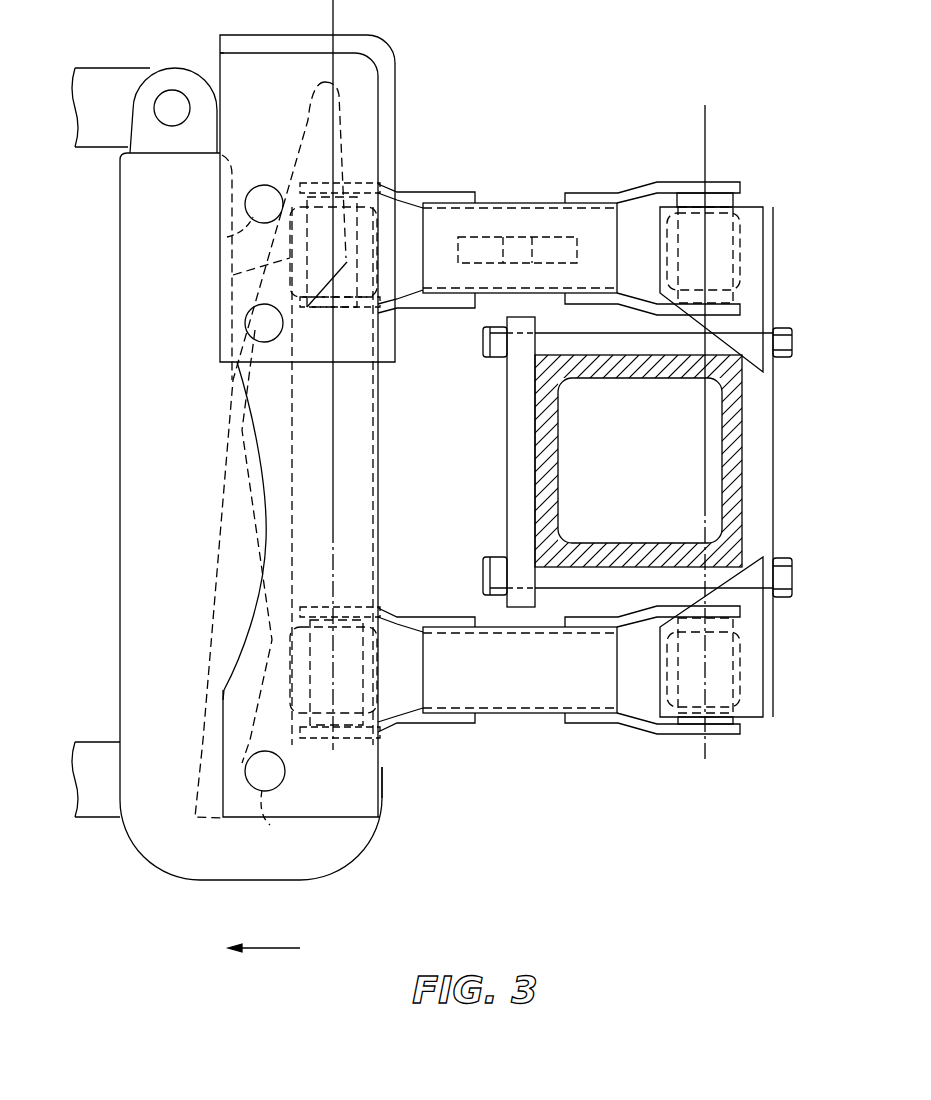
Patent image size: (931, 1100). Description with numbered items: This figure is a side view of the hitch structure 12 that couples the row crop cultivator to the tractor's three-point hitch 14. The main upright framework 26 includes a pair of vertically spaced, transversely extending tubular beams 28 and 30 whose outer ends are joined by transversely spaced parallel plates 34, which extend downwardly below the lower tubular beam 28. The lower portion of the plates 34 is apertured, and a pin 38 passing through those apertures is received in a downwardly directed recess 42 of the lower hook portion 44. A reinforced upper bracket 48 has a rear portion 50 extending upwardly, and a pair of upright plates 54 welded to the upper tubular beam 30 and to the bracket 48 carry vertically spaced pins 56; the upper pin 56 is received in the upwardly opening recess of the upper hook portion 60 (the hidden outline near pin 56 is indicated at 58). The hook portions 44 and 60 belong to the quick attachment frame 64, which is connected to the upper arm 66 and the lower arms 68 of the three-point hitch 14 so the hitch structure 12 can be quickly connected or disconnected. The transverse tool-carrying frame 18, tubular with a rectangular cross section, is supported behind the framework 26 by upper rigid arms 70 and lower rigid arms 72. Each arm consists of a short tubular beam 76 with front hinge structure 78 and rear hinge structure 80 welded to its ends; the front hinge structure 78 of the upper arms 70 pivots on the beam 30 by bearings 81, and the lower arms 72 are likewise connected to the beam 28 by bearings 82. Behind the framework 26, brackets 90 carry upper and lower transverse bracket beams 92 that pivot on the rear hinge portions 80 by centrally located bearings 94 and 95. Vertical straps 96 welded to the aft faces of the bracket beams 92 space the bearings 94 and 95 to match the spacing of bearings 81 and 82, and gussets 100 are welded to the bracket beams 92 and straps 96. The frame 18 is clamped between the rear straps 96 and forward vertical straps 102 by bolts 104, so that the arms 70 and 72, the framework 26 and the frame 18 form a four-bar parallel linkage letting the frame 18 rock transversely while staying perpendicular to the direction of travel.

The hitch structure 12 is at (501, 29).
The three-point hitch 14 is at (168, 900).
The transverse tool-carrying frame 18 is at (742, 470).
The main upright framework 26 is at (386, 477).
The tubular beam 28 is at (290, 662).
The tubular beam 30 is at (233, 275).
The plates 34 is at (378, 752).
The pin 38 is at (282, 780).
The recess 42 is at (262, 812).
The lower hook portion 44 is at (347, 853).
The reinforced upper bracket 48 is at (218, 57).
The rear portion 50 is at (397, 118).
The upright plates 54 is at (279, 102).
The pins 56 is at (261, 186).
The hidden arm edge 58 is at (227, 237).
The upper hook portion 60 is at (338, 113).
The quick attachment frame 64 is at (120, 468).
The upper arm 66 is at (122, 68).
The lower arms 68 is at (88, 818).
The rigid arms 70 is at (538, 194).
The rigid arms 72 is at (548, 730).
The tubular beam 76 is at (498, 215).
The front hinge structure 78 is at (413, 193).
The rear hinge structure 80 is at (652, 190).
The bearings 81 is at (345, 190).
The bearings 82 is at (372, 614).
The brackets 90 is at (792, 232).
The bracket beams 92 is at (740, 228).
The bearing 94 is at (733, 197).
The bearing 95 is at (736, 722).
The vertical straps 96 is at (774, 397).
The gussets 100 is at (755, 262).
The forward vertical straps 102 is at (507, 417).
The bolts 104 is at (482, 342).